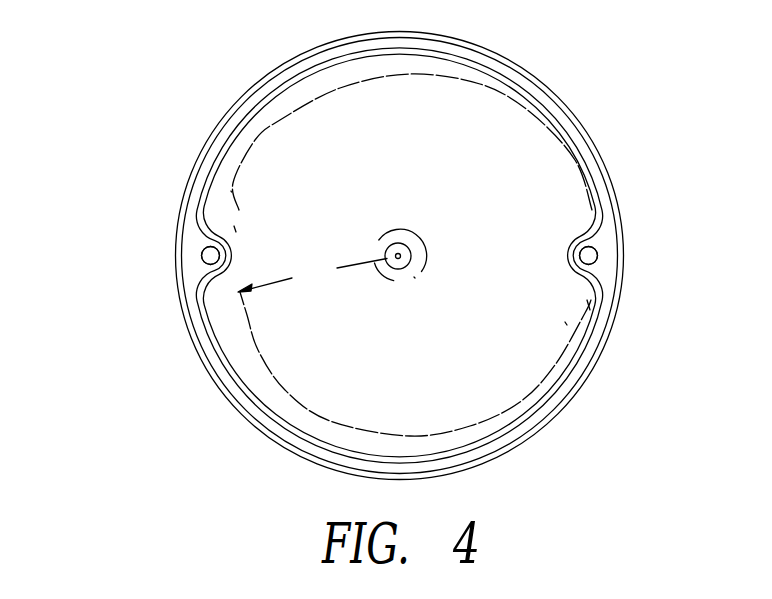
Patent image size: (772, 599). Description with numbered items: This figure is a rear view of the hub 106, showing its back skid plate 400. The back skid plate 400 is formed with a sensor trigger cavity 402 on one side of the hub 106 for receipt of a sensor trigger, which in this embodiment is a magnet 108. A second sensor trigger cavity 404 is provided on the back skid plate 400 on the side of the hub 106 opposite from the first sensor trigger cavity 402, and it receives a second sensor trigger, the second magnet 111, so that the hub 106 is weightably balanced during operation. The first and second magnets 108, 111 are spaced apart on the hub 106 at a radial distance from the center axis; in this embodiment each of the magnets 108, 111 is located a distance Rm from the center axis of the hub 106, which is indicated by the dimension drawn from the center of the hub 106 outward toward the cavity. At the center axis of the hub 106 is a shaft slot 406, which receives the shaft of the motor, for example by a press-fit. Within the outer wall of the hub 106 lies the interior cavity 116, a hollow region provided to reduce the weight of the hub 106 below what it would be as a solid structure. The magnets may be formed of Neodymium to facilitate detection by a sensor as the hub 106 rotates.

The hub 106 is at (238, 82).
The back skid plate 400 is at (563, 80).
The interior cavity 116 is at (524, 166).
The shaft slot 406 is at (416, 244).
The second sensor trigger cavity 404 is at (203, 248).
The sensor trigger cavity 402 is at (596, 245).
The magnet 108 is at (590, 259).
The second magnet 111 is at (210, 256).
The radial distance Rm is at (312, 280).